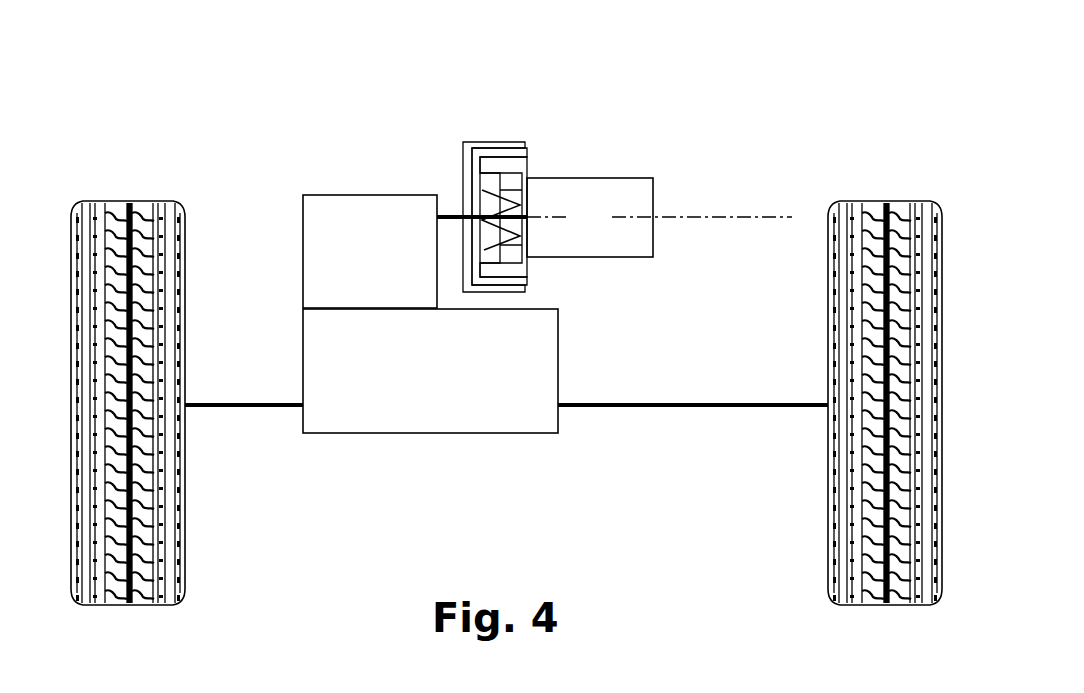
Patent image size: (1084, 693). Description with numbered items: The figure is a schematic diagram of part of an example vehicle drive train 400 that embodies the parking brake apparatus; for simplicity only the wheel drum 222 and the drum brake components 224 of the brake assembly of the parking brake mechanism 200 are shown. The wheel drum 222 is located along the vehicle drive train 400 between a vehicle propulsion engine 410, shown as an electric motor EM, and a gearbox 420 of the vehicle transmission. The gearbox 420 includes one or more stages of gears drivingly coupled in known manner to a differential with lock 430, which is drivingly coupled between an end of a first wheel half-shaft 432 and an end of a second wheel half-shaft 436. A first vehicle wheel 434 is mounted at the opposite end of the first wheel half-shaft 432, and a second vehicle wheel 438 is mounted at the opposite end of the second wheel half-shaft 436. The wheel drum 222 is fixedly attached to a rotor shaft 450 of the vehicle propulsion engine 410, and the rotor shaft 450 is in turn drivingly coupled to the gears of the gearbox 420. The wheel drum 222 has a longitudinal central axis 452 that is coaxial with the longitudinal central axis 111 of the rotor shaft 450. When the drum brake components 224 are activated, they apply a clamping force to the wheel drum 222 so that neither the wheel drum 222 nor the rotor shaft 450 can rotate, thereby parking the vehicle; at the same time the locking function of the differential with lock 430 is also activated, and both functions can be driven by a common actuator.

The parking brake mechanism 200 is at (497, 57).
The wheel drum 222 is at (510, 147).
The drum brake components 224 is at (527, 182).
The vehicle drive train 400 is at (786, 140).
The vehicle propulsion engine 410 is at (645, 178).
The gearbox 420 is at (370, 195).
The differential with lock 430 is at (558, 372).
The first wheel half-shaft 432 is at (247, 407).
The first vehicle wheel 434 is at (185, 537).
The second wheel half-shaft 436 is at (740, 407).
The second vehicle wheel 438 is at (828, 523).
The rotor shaft 450 is at (455, 212).
The longitudinal central axis 452 is at (695, 217).
The longitudinal central axis 111 is at (778, 217).